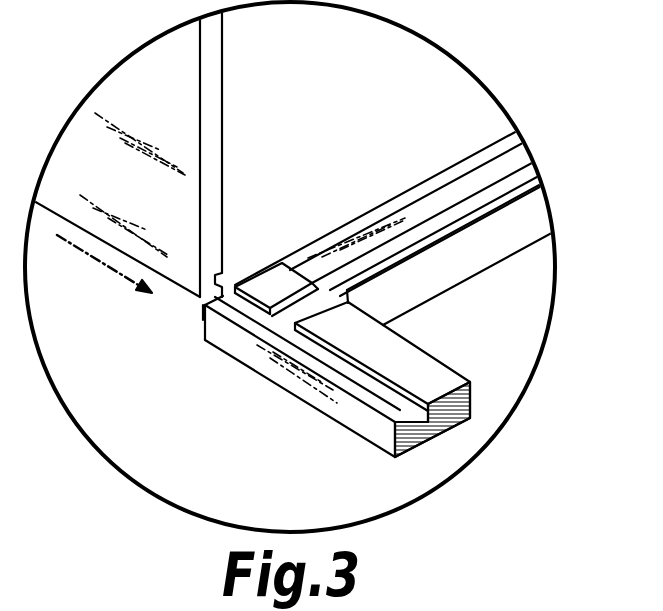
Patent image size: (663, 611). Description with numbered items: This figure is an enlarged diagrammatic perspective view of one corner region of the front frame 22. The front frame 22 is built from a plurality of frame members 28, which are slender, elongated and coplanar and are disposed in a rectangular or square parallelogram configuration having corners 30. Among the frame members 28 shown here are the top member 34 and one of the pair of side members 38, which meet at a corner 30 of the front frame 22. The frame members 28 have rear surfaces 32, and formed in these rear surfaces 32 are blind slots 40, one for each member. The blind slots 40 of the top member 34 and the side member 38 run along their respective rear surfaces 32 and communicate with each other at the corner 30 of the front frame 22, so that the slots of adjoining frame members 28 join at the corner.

The front frame 22 is at (386, 198).
The frame members 28 is at (433, 354).
The corners 30 is at (203, 312).
The rear surfaces 32 is at (443, 420).
The top member 34 is at (348, 222).
The side members 38 is at (268, 368).
The blind slots 40 is at (444, 232).